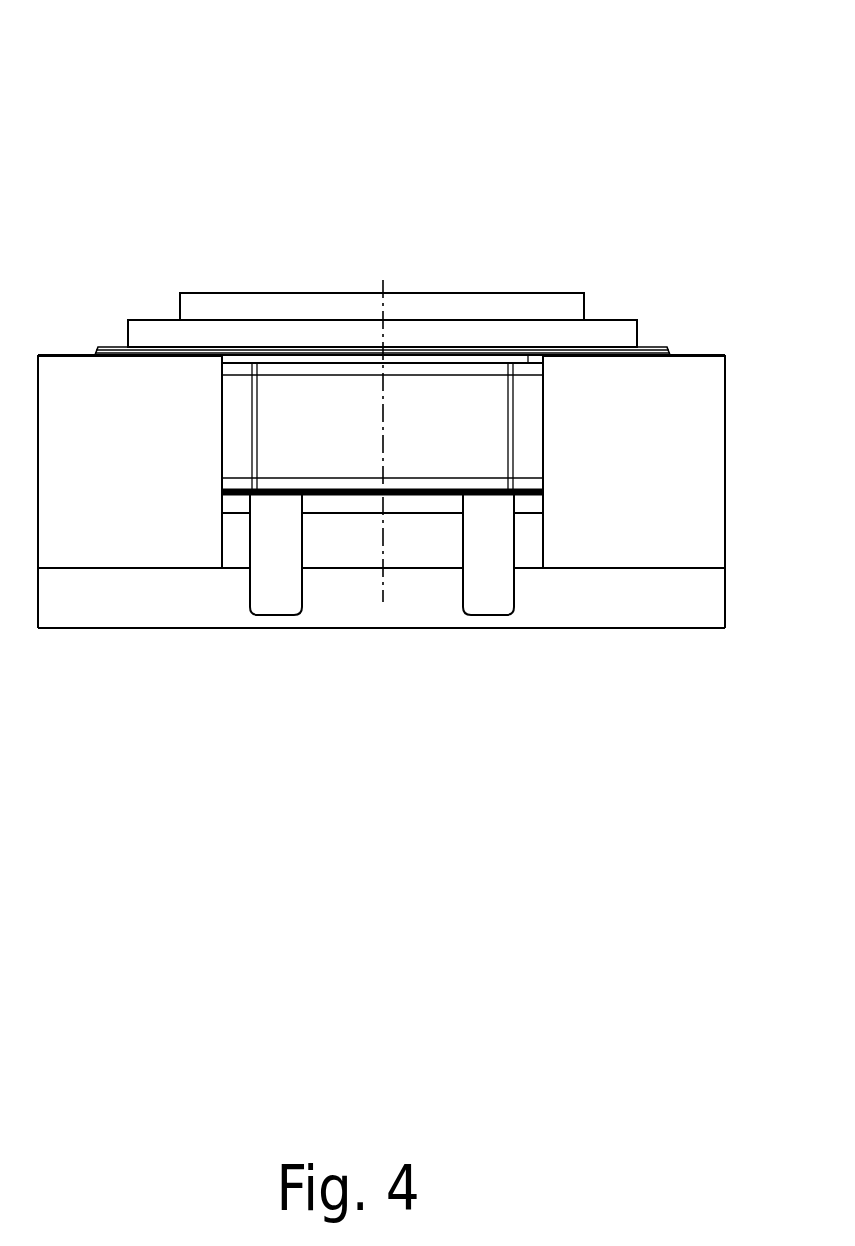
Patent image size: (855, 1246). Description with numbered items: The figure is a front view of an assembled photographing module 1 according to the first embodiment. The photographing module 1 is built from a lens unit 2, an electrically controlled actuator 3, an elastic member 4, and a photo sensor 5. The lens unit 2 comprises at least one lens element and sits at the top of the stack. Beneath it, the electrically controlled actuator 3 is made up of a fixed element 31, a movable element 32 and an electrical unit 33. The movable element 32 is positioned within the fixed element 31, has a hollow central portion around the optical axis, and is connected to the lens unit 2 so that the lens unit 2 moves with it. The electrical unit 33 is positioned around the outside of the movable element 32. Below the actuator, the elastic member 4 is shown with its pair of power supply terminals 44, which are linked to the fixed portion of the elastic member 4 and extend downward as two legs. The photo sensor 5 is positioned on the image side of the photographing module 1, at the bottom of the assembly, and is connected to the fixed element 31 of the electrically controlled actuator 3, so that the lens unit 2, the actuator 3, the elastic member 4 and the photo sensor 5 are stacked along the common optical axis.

The photographing module 1 is at (724, 53).
The lens unit 2 is at (230, 312).
The electrically controlled actuator 3 is at (622, 195).
The fixed element 31 is at (675, 395).
The movable element 32 is at (620, 332).
The electrical unit 33 is at (460, 393).
The elastic member 4 is at (348, 503).
The power supply terminals 44 is at (282, 598).
The photo sensor 5 is at (165, 598).